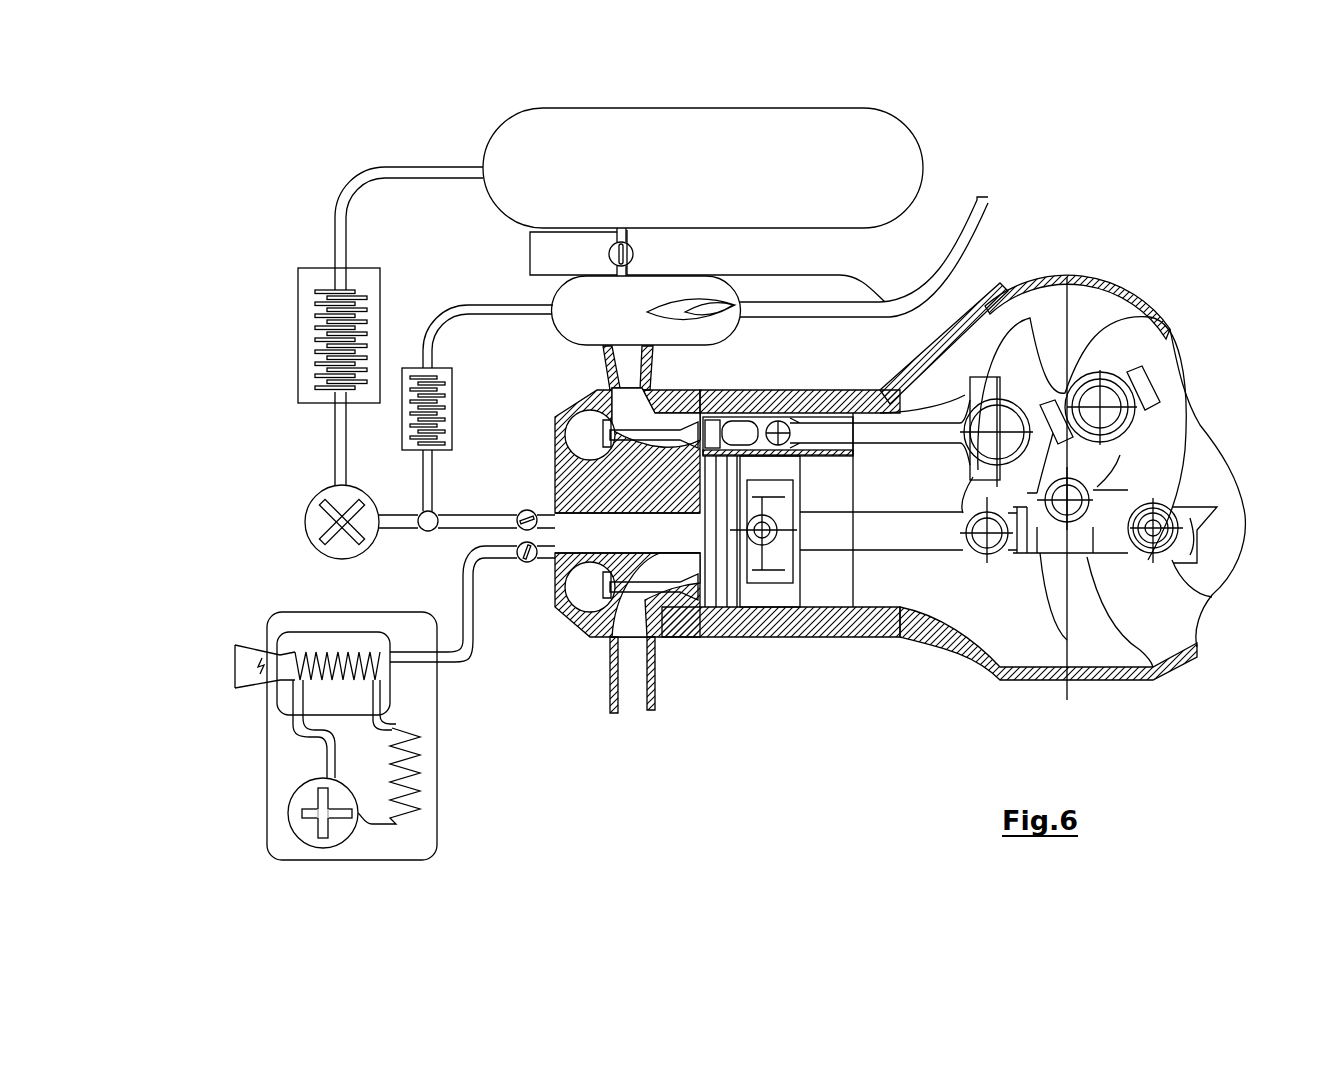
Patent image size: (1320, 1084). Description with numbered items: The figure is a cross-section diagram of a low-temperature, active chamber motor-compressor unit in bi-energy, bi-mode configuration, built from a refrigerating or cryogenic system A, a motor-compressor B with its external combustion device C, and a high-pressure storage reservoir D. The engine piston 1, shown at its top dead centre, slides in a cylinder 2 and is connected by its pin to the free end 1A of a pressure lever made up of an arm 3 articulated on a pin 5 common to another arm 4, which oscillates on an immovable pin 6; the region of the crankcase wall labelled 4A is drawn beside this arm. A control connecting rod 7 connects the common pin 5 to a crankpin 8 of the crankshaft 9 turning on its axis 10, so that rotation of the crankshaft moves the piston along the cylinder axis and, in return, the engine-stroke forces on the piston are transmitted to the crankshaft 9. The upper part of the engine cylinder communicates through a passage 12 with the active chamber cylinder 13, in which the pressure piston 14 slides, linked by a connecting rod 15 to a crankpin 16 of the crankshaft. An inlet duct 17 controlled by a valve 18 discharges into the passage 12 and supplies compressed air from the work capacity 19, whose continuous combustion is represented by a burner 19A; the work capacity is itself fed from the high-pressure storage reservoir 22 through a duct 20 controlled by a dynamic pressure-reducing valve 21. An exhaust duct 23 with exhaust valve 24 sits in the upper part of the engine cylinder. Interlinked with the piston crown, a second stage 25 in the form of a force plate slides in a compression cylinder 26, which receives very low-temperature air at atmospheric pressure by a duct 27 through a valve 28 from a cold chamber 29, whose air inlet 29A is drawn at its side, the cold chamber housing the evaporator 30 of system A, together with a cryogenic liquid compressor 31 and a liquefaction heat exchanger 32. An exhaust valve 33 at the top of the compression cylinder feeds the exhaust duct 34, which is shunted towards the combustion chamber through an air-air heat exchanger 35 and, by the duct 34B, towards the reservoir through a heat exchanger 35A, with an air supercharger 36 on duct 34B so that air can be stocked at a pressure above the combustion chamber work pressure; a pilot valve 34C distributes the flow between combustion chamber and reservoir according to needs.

The engine piston 1 is at (705, 560).
The free end of pressure lever 1A is at (762, 547).
The cylinder 2 is at (790, 645).
The arm 3 is at (883, 527).
The arm 4 is at (1065, 660).
The crankcase wall 4A is at (1160, 673).
The pin 5 is at (985, 560).
The immovable pin 6 is at (1210, 597).
The control connecting rod 7 is at (1130, 487).
The crankpin 8 is at (1137, 373).
The crankshaft 9 is at (1097, 360).
The axis 10 is at (1097, 480).
The passage 12 is at (778, 421).
The active chamber cylinder 13 is at (840, 389).
The pressure piston 14 is at (813, 388).
The connecting rod 15 is at (943, 350).
The crankpin 16 is at (1000, 345).
The inlet duct 17 is at (637, 377).
The valve 18 is at (637, 390).
The work capacity 19 is at (640, 332).
The burner 19A is at (731, 304).
The duct 20 is at (633, 233).
The dynamic pressure-reducing valve 21 is at (609, 257).
The high-pressure storage reservoir 22 is at (780, 177).
The exhaust duct 23 is at (643, 645).
The exhaust valve 24 is at (583, 620).
The second stage 25 is at (625, 523).
The compression cylinder 26 is at (640, 522).
The duct 27 is at (470, 587).
The valve 28 is at (525, 565).
The cold chamber 29 is at (287, 668).
The air inlet 29A is at (257, 660).
The evaporator 30 is at (348, 658).
The cryogenic liquid compressor 31 is at (290, 800).
The liquefaction heat exchanger 32 is at (420, 793).
The exhaust valve 33 is at (513, 525).
The exhaust duct 34 is at (443, 512).
The duct 34B is at (337, 437).
The pilot valve 34C is at (427, 533).
The air-air heat exchanger 35 is at (398, 367).
The heat exchanger 35A is at (340, 302).
The air supercharger 36 is at (323, 507).
The refrigerating or cryogenic system A is at (437, 857).
The motor-compressor B is at (1093, 675).
The external combustion device C is at (575, 280).
The high-pressure storage reservoir D is at (488, 145).